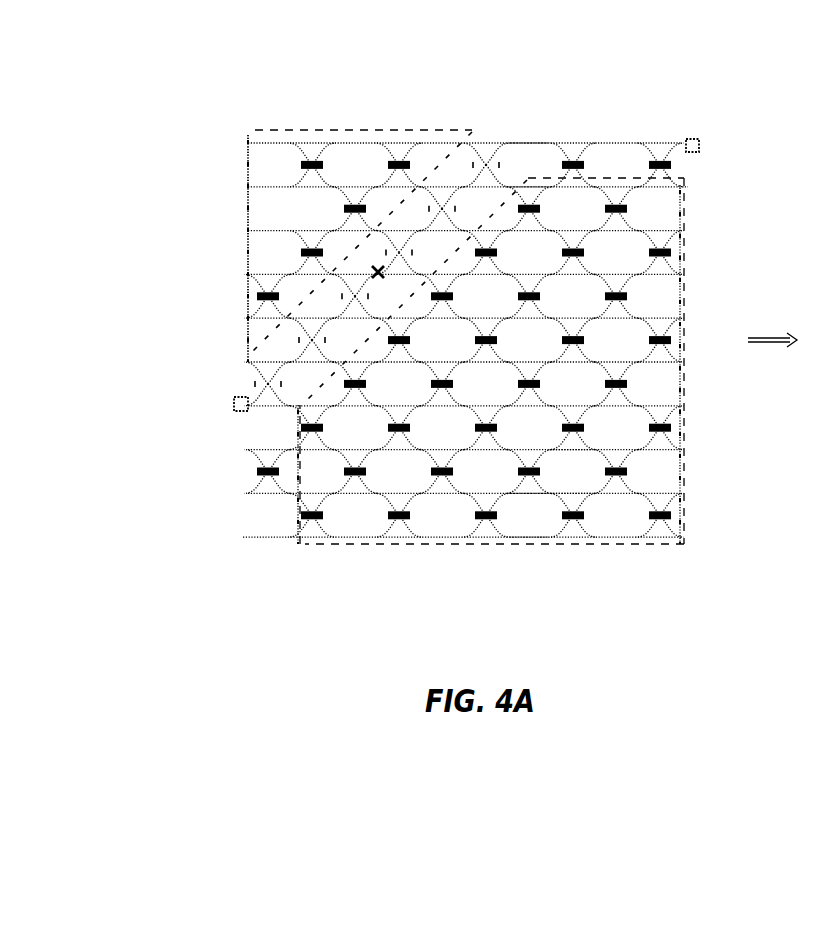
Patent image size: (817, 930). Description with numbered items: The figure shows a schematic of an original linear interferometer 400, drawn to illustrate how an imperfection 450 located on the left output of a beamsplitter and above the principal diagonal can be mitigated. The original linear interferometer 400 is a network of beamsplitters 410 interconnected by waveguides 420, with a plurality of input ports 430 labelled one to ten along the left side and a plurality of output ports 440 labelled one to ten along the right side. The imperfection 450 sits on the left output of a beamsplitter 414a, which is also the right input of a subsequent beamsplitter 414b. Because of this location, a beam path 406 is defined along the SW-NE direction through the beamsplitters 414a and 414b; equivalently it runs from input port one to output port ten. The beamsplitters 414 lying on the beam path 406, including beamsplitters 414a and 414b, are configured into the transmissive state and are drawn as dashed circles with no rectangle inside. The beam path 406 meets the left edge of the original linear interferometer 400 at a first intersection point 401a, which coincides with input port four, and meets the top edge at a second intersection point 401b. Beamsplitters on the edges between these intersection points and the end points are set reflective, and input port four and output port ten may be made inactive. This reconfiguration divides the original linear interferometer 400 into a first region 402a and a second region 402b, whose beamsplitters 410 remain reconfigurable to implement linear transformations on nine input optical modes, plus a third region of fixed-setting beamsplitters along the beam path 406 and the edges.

The original linear interferometer 400 is at (250, 554).
The first intersection point 401a is at (229, 396).
The second intersection point 401b is at (517, 137).
The first region 402a is at (247, 178).
The second region 402b is at (351, 545).
The beam path 406 is at (481, 136).
The beamsplitters 410 is at (584, 520).
The beamsplitters on the beam path 414 is at (436, 192).
The beamsplitter 414a is at (375, 252).
The subsequent beamsplitter 414b is at (336, 293).
The waveguides 420 is at (589, 456).
The input ports 430 is at (230, 118).
The output ports 440 is at (711, 119).
The imperfection 450 is at (366, 271).